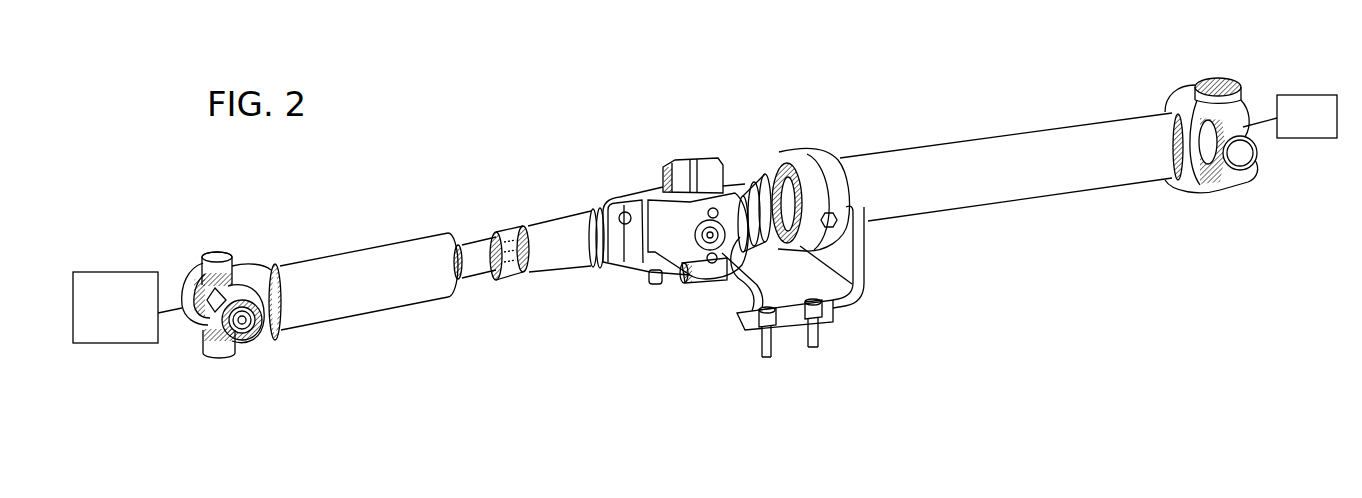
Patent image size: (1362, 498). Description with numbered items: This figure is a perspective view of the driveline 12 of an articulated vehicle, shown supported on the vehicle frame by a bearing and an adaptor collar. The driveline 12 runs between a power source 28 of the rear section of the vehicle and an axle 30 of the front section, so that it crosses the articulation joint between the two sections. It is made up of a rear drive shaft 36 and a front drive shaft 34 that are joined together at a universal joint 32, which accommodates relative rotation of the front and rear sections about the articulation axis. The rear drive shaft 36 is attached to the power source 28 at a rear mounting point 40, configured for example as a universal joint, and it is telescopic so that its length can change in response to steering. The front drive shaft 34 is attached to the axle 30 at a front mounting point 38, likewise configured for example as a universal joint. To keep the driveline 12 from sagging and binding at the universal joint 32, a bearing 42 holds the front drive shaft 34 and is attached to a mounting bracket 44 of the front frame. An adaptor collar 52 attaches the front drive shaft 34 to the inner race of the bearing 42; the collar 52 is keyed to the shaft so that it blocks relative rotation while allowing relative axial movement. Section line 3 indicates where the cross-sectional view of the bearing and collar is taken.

The driveline 12 is at (470, 200).
The power source 28 is at (138, 271).
The axle 30 is at (1322, 95).
The universal joint 32 is at (684, 262).
The front drive shaft 34 is at (878, 153).
The rear drive shaft 36 is at (350, 248).
The front mounting point 38 is at (1253, 172).
The rear mounting point 40 is at (257, 330).
The bearing 42 is at (797, 150).
The mounting bracket 44 is at (818, 307).
The adaptor collar 52 is at (778, 240).
The section line 3- 3 is at (648, 153).